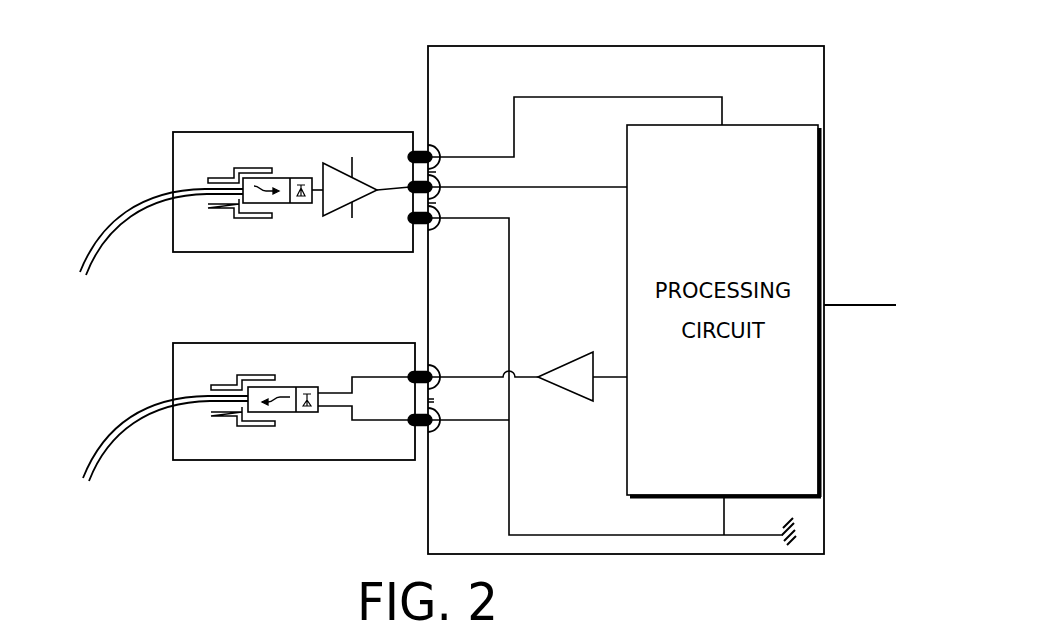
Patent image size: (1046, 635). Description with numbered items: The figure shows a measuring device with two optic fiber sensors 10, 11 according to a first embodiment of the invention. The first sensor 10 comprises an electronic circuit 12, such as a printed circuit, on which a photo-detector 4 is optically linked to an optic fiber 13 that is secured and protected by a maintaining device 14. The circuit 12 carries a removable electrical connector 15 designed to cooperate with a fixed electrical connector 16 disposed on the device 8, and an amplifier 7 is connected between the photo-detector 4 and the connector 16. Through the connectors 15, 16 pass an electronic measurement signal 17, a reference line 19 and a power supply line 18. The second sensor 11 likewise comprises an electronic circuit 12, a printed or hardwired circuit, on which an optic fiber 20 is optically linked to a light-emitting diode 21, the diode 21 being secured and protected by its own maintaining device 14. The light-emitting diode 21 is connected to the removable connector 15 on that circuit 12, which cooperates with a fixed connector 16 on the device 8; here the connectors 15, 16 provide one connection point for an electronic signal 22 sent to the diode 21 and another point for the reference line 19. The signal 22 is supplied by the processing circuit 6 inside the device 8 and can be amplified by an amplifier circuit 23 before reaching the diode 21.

The photo-detector 4 is at (306, 178).
The processing circuit 6 is at (822, 133).
The amplifier 7 is at (341, 164).
The device 8 is at (428, 49).
The first sensor 10 is at (135, 172).
The second sensor 11 is at (137, 376).
The electronic circuit 12 is at (270, 155).
The optic fiber 13 is at (93, 237).
The maintaining device 14 is at (224, 168).
The removable electrical connector 15 is at (409, 150).
The fixed electrical connector 16 is at (440, 147).
The electronic measurement signal 17 is at (589, 188).
The power supply line 18 is at (567, 97).
The reference line 19 is at (373, 220).
The optic fiber 20 is at (93, 443).
The light-emitting diode 21 is at (282, 413).
The electronic signal 22 is at (530, 380).
The amplifier circuit 23 is at (564, 358).